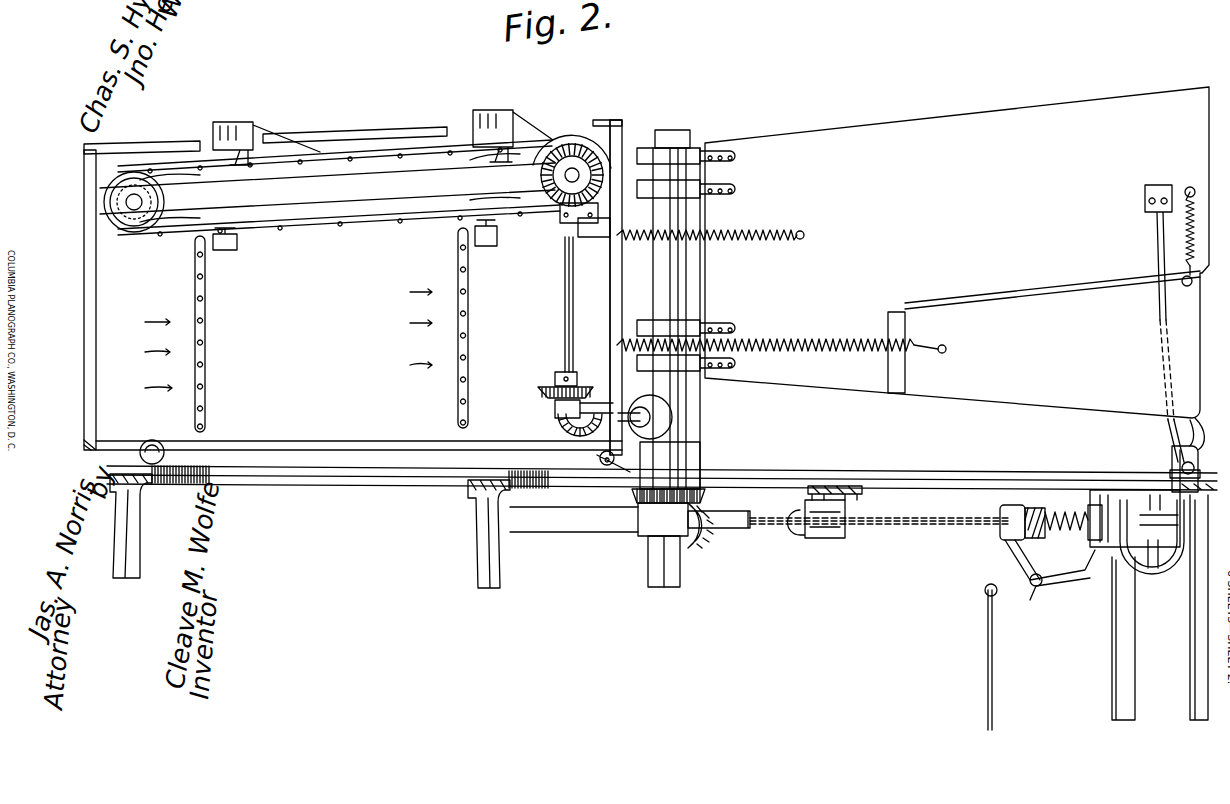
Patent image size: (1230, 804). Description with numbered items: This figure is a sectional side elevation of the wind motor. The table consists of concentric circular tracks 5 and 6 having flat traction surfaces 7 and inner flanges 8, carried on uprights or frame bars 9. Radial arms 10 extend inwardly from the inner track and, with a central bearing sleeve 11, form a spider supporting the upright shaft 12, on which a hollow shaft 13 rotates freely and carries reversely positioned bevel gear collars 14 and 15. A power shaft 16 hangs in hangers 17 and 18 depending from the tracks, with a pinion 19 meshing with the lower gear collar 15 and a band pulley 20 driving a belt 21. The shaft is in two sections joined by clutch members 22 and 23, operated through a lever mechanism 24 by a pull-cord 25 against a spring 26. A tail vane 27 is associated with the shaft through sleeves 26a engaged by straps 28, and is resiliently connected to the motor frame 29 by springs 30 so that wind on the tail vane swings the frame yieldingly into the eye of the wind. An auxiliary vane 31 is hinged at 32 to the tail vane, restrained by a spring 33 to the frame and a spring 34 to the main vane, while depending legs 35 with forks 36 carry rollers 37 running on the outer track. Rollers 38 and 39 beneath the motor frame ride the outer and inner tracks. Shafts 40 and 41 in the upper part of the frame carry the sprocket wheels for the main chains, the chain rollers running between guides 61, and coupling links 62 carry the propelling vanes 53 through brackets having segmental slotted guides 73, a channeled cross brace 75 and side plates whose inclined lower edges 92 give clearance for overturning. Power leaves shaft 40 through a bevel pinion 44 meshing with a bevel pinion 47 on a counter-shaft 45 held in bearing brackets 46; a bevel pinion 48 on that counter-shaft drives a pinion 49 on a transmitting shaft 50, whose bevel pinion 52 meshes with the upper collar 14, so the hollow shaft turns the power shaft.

The circular track 5 is at (1195, 484).
The circular track 6 is at (639, 469).
The flat traction surface 7 is at (853, 480).
The inner flange 8 is at (820, 486).
The upright or frame bar 9 is at (143, 563).
The radial arm 10 is at (575, 535).
The central bearing sleeve 11 is at (650, 528).
The shaft 12 is at (683, 560).
The hollow shaft 13 is at (700, 470).
The bevel gear collar 14 is at (690, 448).
The bevel gear collar 15 is at (700, 480).
The power shaft 16 is at (875, 530).
The hanger 17 is at (828, 538).
The hanger 18 is at (1110, 512).
The pinion 19 is at (715, 495).
The band pulley 20 is at (1180, 585).
The belt 21 is at (1112, 632).
The clutch member 22 is at (1008, 540).
The clutch member 23 is at (1032, 508).
The lever mechanism 24 is at (1036, 586).
The pull-cord 25 is at (985, 636).
The spring 26 is at (1060, 532).
The sleeve 26a is at (690, 172).
The tail vane 27 is at (957, 252).
The strap 28 is at (700, 165).
The motor frame 29 is at (612, 282).
The spring 30 is at (748, 242).
The auxiliary vane 31 is at (1052, 314).
The hinge 32 is at (895, 312).
The spring 33 is at (815, 340).
The spring 34 is at (1186, 235).
The depending leg 35 is at (1158, 262).
The fork 36 is at (1197, 363).
The roller 37 is at (1196, 464).
The roller 38 is at (140, 462).
The roller 39 is at (575, 440).
The shaft 40 is at (574, 172).
The shaft 41 is at (136, 210).
The bevel pinion 44 is at (548, 150).
The counter-shaft 45 is at (565, 312).
The bearing bracket 46 is at (575, 250).
The bevel pinion 47 is at (578, 228).
The bevel pinion 48 is at (590, 373).
The pinion 49 is at (555, 412).
The transmitting shaft 50 is at (636, 405).
The bevel pinion 52 is at (665, 408).
The propelling vane 53 is at (207, 335).
The guide 61 is at (282, 158).
The coupling link 62 is at (385, 222).
The segmental slotted guide 73 is at (335, 188).
The channeled cross brace 75 is at (440, 232).
The lower edge 92 is at (240, 122).